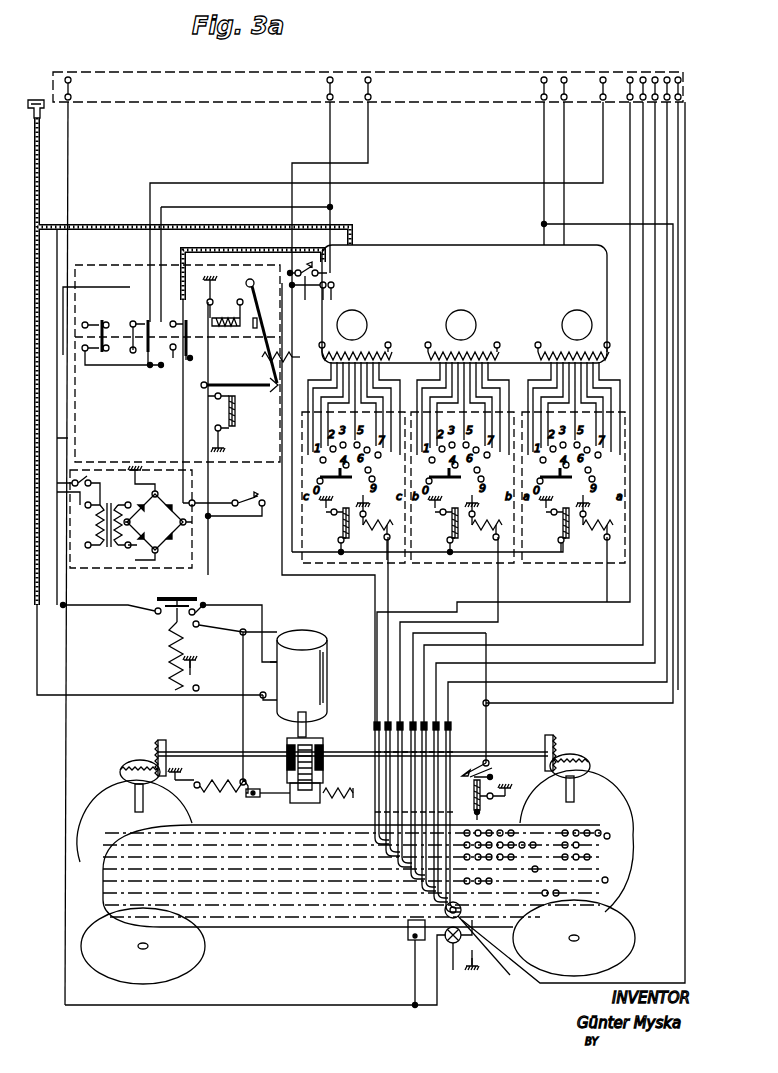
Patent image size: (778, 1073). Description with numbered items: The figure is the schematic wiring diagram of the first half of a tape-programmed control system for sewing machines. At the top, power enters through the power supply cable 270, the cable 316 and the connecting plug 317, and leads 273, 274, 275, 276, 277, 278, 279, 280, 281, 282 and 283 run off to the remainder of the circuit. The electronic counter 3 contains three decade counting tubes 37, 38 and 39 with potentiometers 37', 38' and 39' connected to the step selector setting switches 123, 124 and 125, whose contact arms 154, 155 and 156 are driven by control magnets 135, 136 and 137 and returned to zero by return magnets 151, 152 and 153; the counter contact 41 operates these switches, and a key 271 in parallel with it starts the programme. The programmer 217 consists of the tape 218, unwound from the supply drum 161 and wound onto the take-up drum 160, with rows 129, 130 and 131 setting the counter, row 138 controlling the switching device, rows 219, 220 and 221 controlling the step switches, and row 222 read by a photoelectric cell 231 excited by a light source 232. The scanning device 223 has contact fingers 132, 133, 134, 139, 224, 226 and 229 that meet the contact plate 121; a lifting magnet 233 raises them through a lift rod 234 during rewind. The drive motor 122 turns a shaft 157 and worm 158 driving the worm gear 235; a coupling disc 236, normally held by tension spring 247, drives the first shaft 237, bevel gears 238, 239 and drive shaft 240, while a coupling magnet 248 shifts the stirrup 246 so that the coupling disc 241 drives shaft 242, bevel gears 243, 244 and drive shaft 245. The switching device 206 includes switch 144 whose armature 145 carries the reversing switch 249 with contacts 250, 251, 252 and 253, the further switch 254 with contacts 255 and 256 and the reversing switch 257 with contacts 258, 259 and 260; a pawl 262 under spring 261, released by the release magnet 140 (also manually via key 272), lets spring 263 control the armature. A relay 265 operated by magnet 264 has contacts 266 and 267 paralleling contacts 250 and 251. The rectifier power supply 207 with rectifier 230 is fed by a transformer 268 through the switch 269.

The electronic counter 3 is at (433, 245).
The decade counting tube 37 is at (355, 313).
The decade counting tube 38 is at (463, 312).
The decade counting tube 39 is at (579, 312).
The potentiometer 37' is at (356, 341).
The potentiometer 38' is at (466, 341).
The potentiometer 39' is at (572, 341).
The contact of the counter 41 is at (333, 283).
The contact plate 121 is at (408, 940).
The drive motor 122 is at (293, 676).
The step selector setting switch 123 is at (551, 581).
The step selector setting switch 124 is at (449, 581).
The step selector setting switch 125 is at (338, 567).
The row of perforations 129 is at (512, 825).
The row of perforations 130 is at (612, 840).
The row of perforations 131 is at (610, 852).
The contact finger 132 is at (413, 722).
The contact finger 133 is at (377, 722).
The contact finger 134 is at (388, 722).
The control magnet 135 is at (594, 524).
The control magnet 136 is at (483, 521).
The control magnet 137 is at (372, 528).
The row of perforations 138 is at (610, 868).
The pickup contact 139 is at (400, 722).
The release magnet 140 is at (233, 430).
The switch 144 is at (223, 301).
The armature 145 is at (261, 331).
The return magnet 151 is at (547, 524).
The return magnet 152 is at (436, 525).
The return magnet 153 is at (341, 530).
The contact arm 154 is at (558, 483).
The contact arm 155 is at (447, 483).
The contact arm 156 is at (338, 478).
The shaft 157 is at (307, 722).
The worm 158 is at (295, 728).
The take-up drum 160 is at (110, 962).
The supply drum 161 is at (620, 950).
The switching device 206 is at (100, 265).
The rectifier power supply 207 is at (126, 568).
The programmer 217 is at (341, 948).
The tape 218 is at (278, 927).
The row of perforations 219 is at (612, 895).
The row of perforations 220 is at (605, 912).
The row of perforations 221 is at (248, 905).
The row of perforations 222 is at (213, 930).
The scanning or pickup device 223 is at (486, 755).
The pickup contact 224 is at (425, 722).
The pickup contact 226 is at (437, 722).
The contact finger 229 is at (449, 730).
The rectifier 230 is at (158, 513).
The photoelectric cell 231 is at (479, 941).
The light source 232 is at (459, 954).
The lifting magnet 233 is at (493, 771).
The lift rod 234 is at (495, 800).
The worm gear 235 is at (305, 793).
The coupling disc 236 is at (287, 744).
The first shaft 237 is at (213, 752).
The bevel gear 238 is at (158, 745).
The bevel gear 239 is at (122, 768).
The drive shaft 240 is at (133, 797).
The coupling disc 241 is at (324, 742).
The shaft 242 is at (343, 757).
The bevel gear 243 is at (553, 746).
The bevel gear 244 is at (585, 758).
The drive shaft 245 is at (576, 790).
The stirrup 246 is at (278, 807).
The tension spring 247 is at (339, 807).
The coupling magnet 248 is at (208, 794).
The reversing switch 249 is at (150, 368).
The contact 250 is at (131, 320).
The contact 251 is at (133, 353).
The contact 252 is at (146, 318).
The contact 253 is at (161, 368).
The further switch 254 is at (91, 336).
The contact 255 is at (86, 320).
The contact 256 is at (85, 353).
The reversing switch 257 is at (190, 350).
The contact 258 is at (190, 361).
The contact 259 is at (190, 332).
The contact 260 is at (173, 320).
The spring 261 is at (245, 422).
The pawl 262 is at (265, 386).
The spring 263 is at (286, 358).
The magnet 264 is at (170, 672).
The relay 265 is at (177, 600).
The relay contact 266 is at (205, 612).
The relay contact 267 is at (146, 612).
The transformer 268 is at (108, 535).
The switch 269 is at (88, 490).
The power supply cable 270 is at (70, 438).
The key 271 is at (312, 296).
The key 272 is at (238, 498).
The lead 273 is at (69, 181).
The line 274 is at (330, 141).
The lead 275 is at (370, 133).
The lead 276 is at (544, 75).
The lead 277 is at (564, 75).
The lead 278 is at (603, 75).
The lead 279 is at (630, 75).
The lead 280 is at (643, 75).
The lead 281 is at (655, 75).
The lead 282 is at (667, 75).
The lead 283 is at (678, 75).
The cable 316 is at (115, 226).
The connecting plug 317 is at (186, 385).